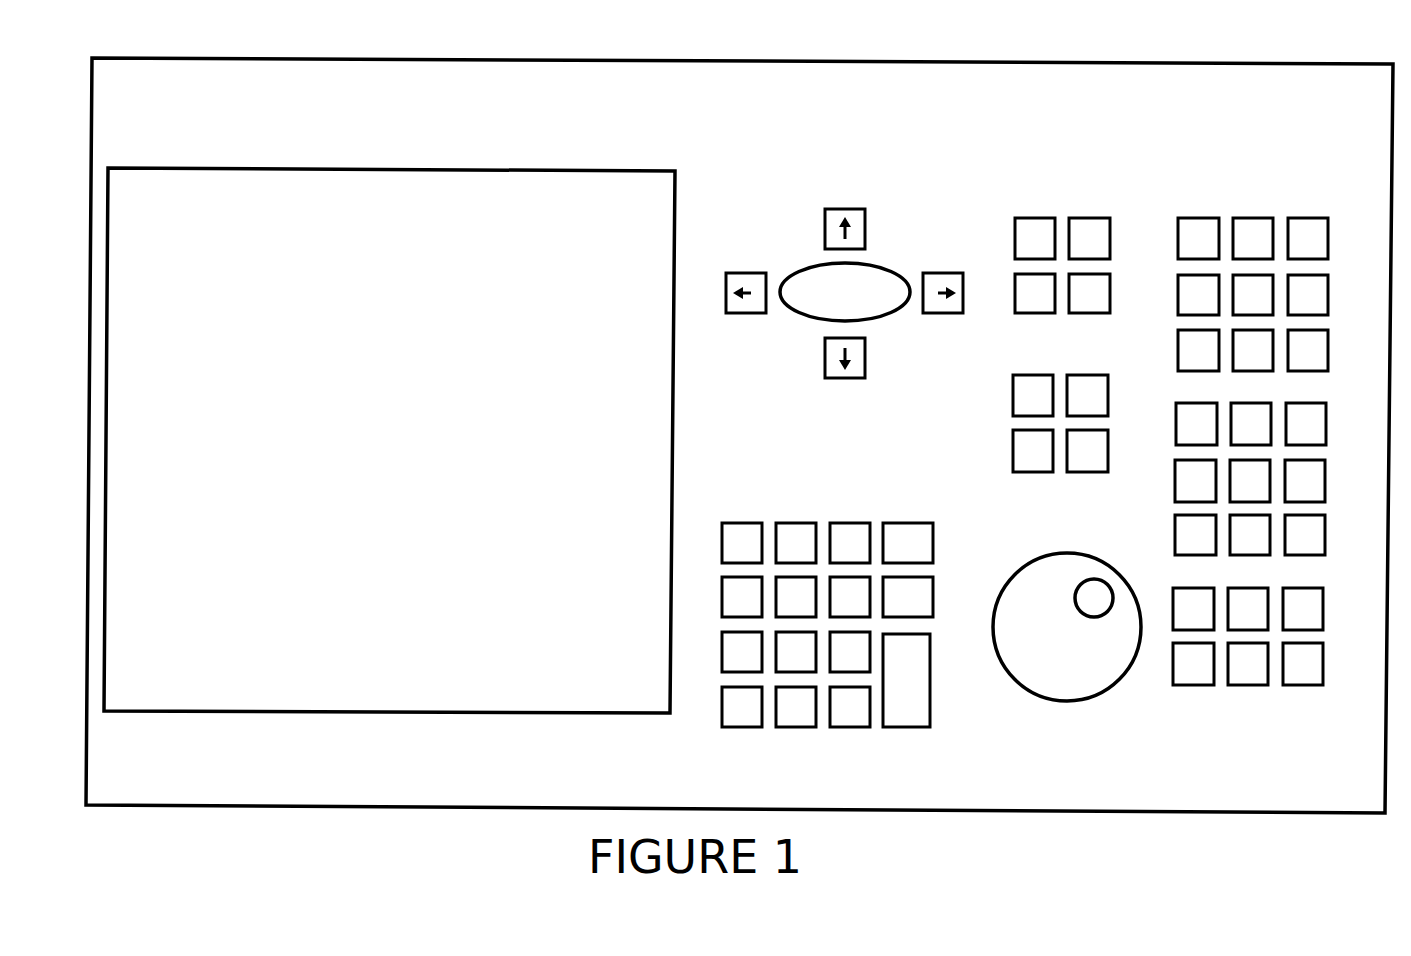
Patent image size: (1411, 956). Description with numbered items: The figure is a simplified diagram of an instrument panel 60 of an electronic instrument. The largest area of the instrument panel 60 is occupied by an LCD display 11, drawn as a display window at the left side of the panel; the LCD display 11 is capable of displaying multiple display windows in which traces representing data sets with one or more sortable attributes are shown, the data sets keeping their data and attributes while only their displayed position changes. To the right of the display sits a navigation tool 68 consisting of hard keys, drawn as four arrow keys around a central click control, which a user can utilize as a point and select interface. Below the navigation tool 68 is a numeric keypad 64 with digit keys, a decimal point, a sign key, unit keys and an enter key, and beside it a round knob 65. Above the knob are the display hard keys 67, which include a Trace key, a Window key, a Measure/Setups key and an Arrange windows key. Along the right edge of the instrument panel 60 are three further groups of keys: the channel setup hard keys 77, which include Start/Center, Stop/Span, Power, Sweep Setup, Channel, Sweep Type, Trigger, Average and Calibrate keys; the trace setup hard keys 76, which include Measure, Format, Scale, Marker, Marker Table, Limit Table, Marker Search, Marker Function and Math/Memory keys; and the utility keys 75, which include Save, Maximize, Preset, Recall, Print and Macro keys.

The instrument panel 60 is at (1322, 814).
The LCD display 11 is at (628, 716).
The navigation tool 68 is at (903, 322).
The numeric keypad 64 is at (930, 737).
The knob 65 is at (1094, 711).
The display hard keys 67 is at (1118, 315).
The channel setup hard keys 77 is at (1336, 370).
The trace setup hard keys 76 is at (1332, 554).
The utility keys 75 is at (1332, 684).